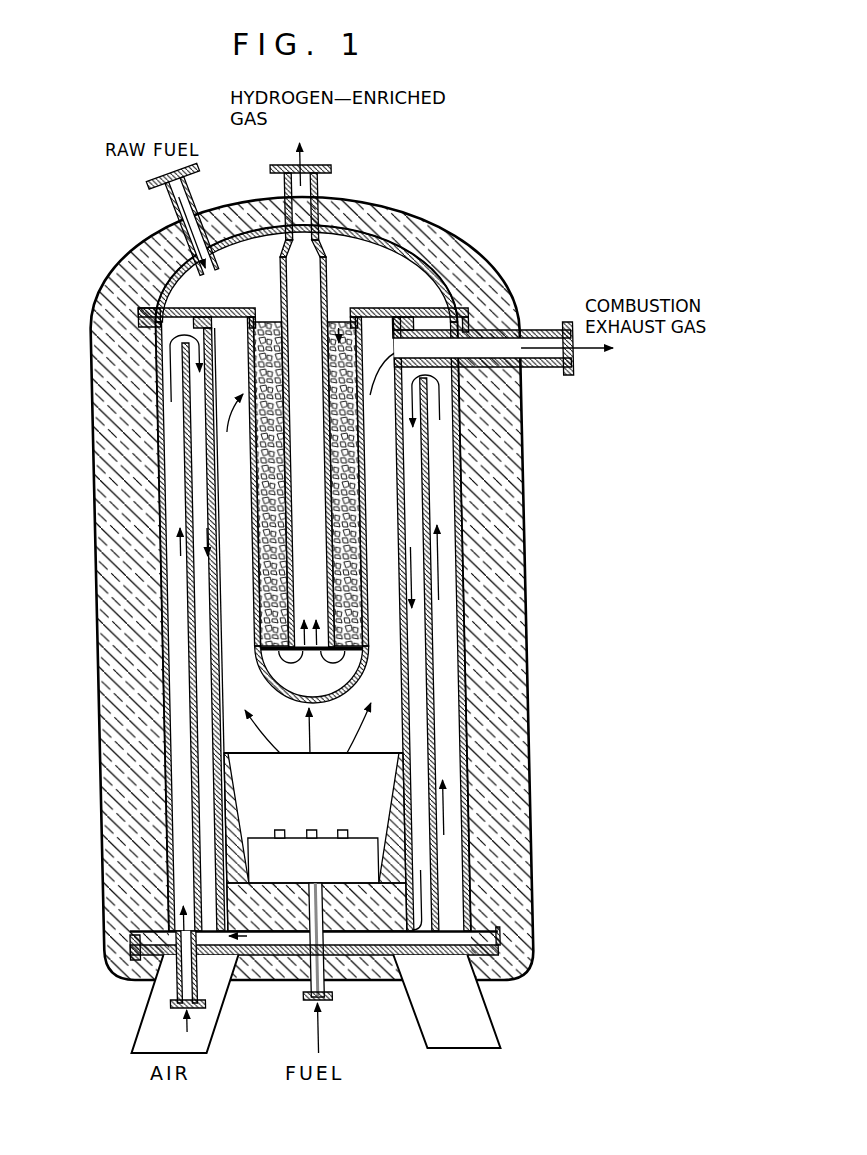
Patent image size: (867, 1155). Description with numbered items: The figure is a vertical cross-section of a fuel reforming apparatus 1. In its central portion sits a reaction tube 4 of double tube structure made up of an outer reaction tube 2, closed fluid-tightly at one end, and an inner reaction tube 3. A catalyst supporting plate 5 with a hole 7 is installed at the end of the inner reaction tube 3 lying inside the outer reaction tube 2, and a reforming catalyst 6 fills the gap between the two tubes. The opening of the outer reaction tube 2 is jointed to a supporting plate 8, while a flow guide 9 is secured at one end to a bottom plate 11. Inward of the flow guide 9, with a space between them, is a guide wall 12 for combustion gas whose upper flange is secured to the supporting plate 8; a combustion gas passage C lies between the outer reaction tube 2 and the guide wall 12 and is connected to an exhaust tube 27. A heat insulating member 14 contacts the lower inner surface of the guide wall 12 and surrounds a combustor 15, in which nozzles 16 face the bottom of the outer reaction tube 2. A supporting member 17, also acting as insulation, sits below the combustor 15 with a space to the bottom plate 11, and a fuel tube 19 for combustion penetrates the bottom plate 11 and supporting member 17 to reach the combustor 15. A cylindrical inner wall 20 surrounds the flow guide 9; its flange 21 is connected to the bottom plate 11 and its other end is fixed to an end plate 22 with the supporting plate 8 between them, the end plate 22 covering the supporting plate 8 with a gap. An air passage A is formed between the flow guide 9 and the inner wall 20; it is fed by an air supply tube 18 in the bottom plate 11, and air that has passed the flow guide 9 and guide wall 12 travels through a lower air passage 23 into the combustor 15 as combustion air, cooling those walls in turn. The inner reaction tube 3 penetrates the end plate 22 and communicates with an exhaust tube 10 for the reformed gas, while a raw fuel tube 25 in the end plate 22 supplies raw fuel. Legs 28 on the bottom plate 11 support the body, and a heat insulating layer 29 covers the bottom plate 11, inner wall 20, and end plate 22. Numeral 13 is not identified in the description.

The fuel reforming apparatus 1 is at (546, 470).
The outer reaction tube 2 is at (353, 343).
The inner reaction tube 3 is at (323, 259).
The reaction tube 4 is at (358, 247).
The catalyst supporting plate 5 is at (350, 647).
The reforming catalyst 6 is at (270, 337).
The hole 7 is at (356, 676).
The supporting plate 8 is at (407, 311).
The flow guide 9 is at (180, 513).
The exhaust tube for raw fuel 10 is at (333, 166).
The bottom plate 11 is at (244, 983).
The guide wall for combustion gas 12 is at (207, 413).
The cylindrical partition 13 is at (198, 323).
The heat insulating member 14 is at (400, 849).
The combustor 15 is at (275, 762).
The nozzles 16 is at (342, 830).
The supporting member 17 is at (369, 932).
The air supply tube 18 is at (172, 1000).
The fuel tube for combustion 19 is at (304, 995).
The inner wall of the reforming apparatus 20 is at (155, 470).
The flange 21 is at (130, 946).
The end plate 22 is at (423, 246).
The lower air passage 23 is at (347, 936).
The raw fuel tube 25 is at (204, 190).
The exhaust tube 27 is at (552, 324).
The legs 28 is at (485, 1027).
The heat insulating layer 29 is at (110, 558).
The air passage A is at (180, 838).
The combustion gas passage C is at (386, 606).